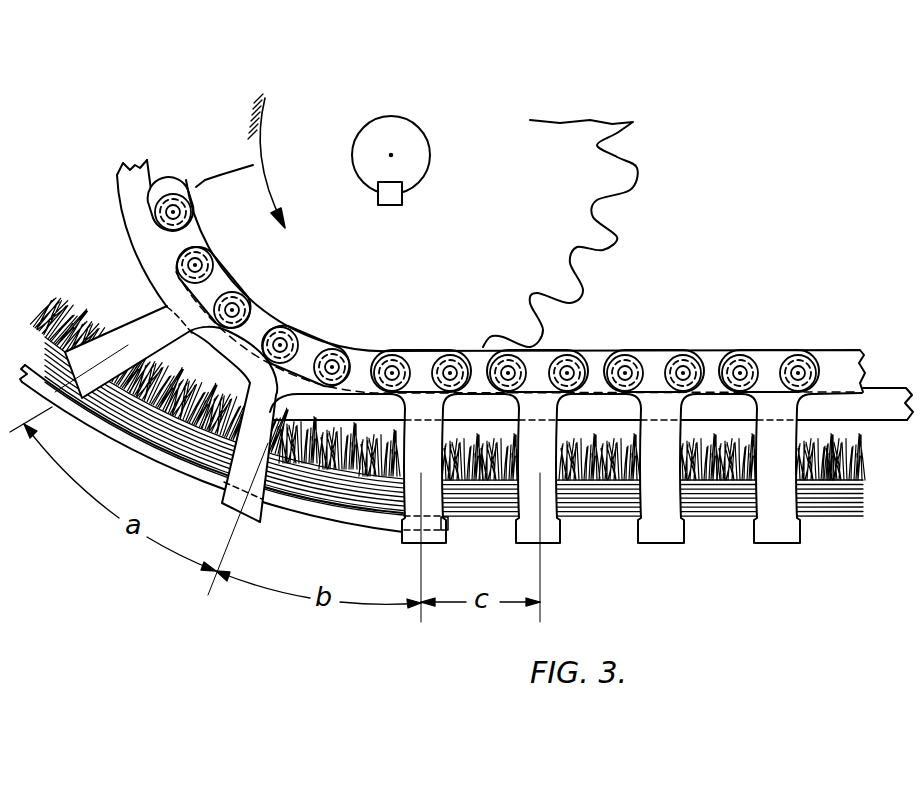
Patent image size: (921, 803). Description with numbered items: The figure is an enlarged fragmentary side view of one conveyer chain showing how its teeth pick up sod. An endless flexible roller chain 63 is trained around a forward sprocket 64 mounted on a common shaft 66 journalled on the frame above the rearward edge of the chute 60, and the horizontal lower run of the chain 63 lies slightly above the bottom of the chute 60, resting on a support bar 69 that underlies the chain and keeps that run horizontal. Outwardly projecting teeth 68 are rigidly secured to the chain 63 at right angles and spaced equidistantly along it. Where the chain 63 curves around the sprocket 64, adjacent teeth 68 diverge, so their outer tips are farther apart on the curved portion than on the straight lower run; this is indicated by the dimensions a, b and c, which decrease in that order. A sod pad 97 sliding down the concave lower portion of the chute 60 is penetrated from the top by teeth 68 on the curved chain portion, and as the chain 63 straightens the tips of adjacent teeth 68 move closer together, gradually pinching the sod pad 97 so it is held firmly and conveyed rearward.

The chute 60 is at (312, 514).
The roller chain 63 is at (726, 372).
The forward sprocket 64 is at (570, 176).
The common shaft 66 is at (397, 139).
The tooth 68 is at (447, 538).
The support bar 69 is at (883, 407).
The sod pad 97 is at (863, 488).